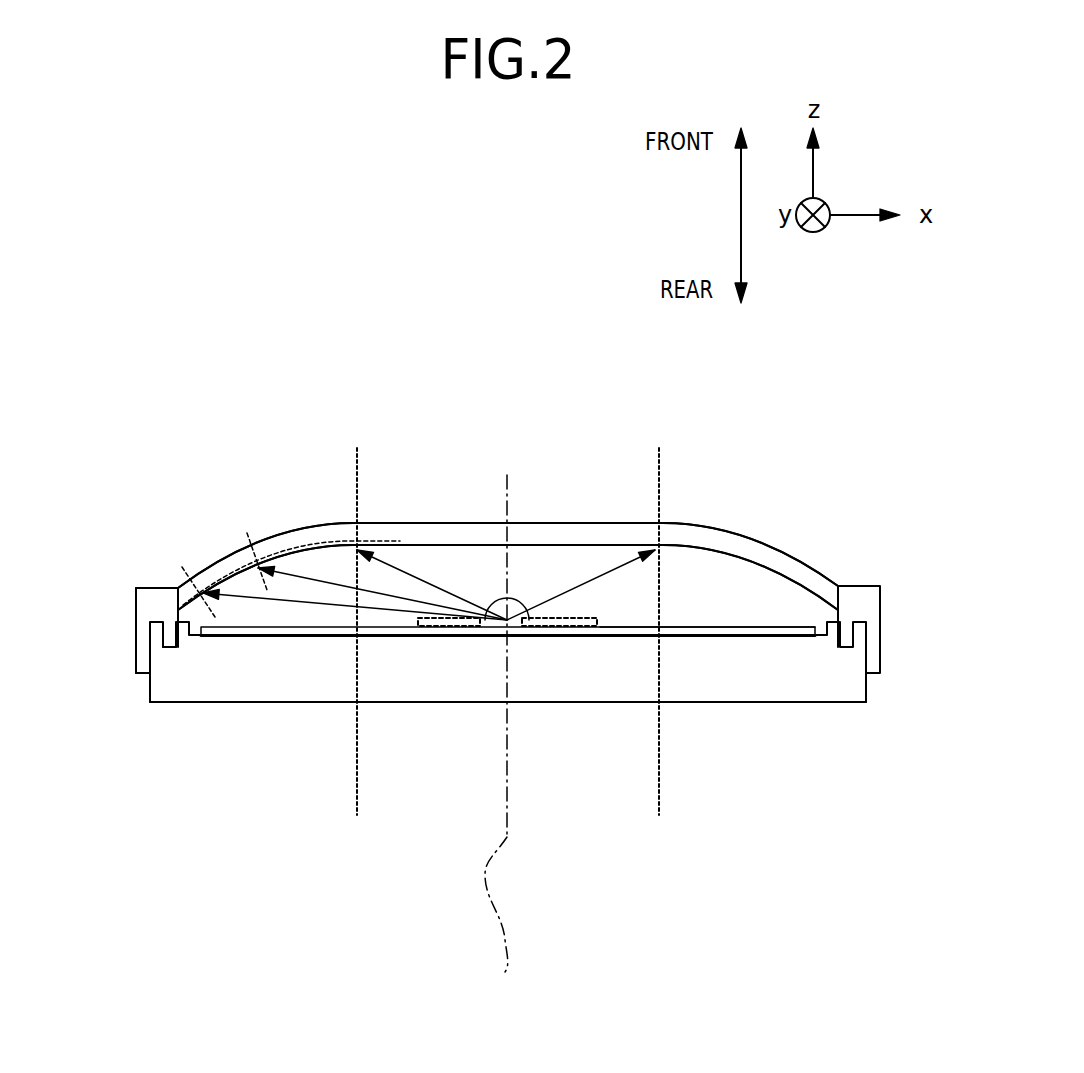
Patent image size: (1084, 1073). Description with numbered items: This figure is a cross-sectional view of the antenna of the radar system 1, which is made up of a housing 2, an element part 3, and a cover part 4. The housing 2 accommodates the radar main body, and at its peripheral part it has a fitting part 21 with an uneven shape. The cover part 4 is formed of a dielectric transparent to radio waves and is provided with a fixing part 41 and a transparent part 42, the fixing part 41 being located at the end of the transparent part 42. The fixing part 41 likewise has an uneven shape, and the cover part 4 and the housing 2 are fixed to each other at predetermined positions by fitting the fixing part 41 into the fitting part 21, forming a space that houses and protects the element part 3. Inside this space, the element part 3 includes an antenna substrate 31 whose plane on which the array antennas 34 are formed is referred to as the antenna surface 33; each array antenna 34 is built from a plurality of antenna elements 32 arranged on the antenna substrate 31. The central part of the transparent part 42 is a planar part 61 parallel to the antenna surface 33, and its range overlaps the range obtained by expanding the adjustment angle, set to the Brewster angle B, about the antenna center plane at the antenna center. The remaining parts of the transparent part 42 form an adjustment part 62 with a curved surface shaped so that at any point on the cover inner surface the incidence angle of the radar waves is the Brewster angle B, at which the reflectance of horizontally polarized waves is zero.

The radar system 1 is at (170, 388).
The housing 2 is at (853, 695).
The element part 3 is at (787, 635).
The cover part 4 is at (743, 548).
The fitting part 21 is at (157, 648).
The antenna substrate 31 is at (322, 635).
The antenna element 32 is at (473, 627).
The antenna surface 33 is at (693, 628).
The array antenna 34 is at (600, 622).
The fixing part 41 is at (148, 605).
The transparent part 42 is at (633, 542).
The planar part 61 is at (468, 535).
The adjustment part 62 is at (305, 542).
The Brewster angle B is at (232, 612).